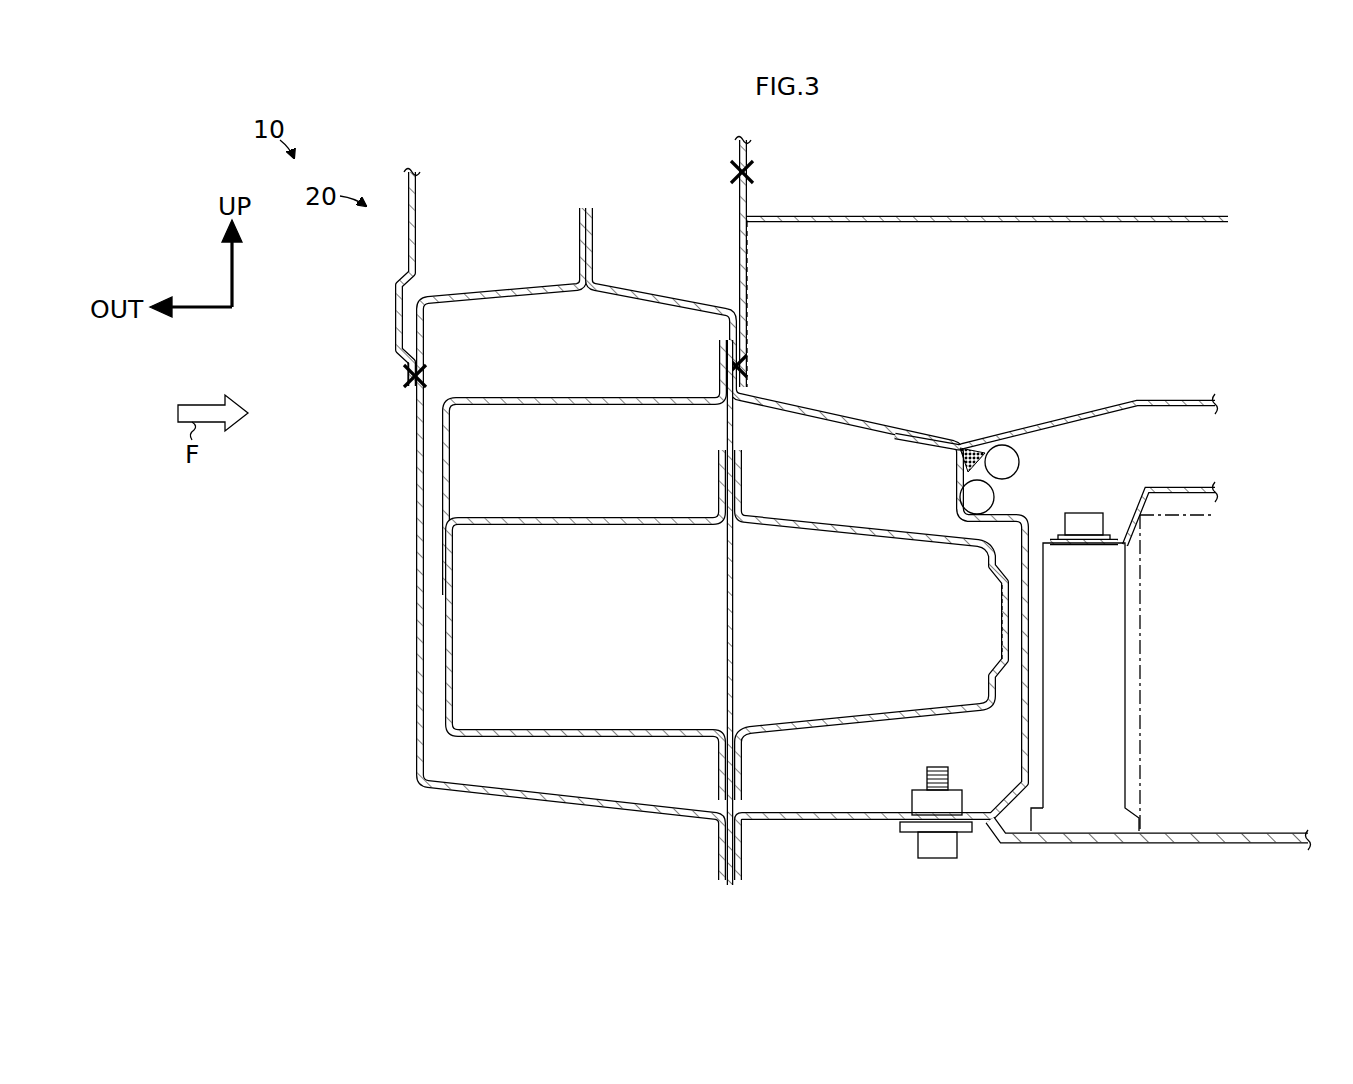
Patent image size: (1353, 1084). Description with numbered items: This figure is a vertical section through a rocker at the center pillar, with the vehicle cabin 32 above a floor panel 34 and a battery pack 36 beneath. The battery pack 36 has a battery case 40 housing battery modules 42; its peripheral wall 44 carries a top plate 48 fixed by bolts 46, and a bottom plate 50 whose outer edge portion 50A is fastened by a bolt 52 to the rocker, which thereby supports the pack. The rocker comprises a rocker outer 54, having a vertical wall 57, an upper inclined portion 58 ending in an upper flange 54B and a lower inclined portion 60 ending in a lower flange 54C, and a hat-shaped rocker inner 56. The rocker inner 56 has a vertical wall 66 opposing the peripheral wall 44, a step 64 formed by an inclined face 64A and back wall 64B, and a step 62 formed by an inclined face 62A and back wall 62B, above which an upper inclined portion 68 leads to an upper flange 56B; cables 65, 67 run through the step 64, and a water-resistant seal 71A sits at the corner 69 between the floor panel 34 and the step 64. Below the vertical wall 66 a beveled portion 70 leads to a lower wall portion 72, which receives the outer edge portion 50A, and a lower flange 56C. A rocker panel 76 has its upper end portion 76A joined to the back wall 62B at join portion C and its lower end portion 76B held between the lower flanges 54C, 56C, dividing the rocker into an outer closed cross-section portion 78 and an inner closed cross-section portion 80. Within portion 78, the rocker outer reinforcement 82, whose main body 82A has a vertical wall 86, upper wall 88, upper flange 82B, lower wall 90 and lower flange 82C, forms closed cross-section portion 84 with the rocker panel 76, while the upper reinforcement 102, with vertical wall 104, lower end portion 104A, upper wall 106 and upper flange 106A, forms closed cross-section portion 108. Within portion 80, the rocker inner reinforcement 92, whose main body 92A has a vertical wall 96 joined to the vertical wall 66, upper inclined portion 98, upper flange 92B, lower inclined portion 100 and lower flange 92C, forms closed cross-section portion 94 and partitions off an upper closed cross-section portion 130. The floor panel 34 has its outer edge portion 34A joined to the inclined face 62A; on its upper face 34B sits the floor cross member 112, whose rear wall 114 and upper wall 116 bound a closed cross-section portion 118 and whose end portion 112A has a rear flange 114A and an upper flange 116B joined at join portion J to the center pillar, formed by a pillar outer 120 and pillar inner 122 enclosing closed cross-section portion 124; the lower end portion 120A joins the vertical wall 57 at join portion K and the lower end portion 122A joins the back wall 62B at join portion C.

The vehicle cabin 32 is at (1078, 190).
The floor panel 34 is at (1146, 398).
The vehicle width direction outer edge portion 34A is at (905, 432).
The upper face 34B is at (1188, 398).
The battery pack 36 is at (1178, 848).
The battery case 40 is at (1110, 840).
The battery module 42 is at (1195, 588).
The peripheral wall 44 is at (1078, 812).
The bolt 46 is at (1084, 518).
The top plate 48 is at (1160, 488).
The bottom plate 50 is at (1232, 845).
The outer edge portion 50A is at (898, 826).
The bolt 52 is at (940, 860).
The rocker outer 54 is at (383, 462).
The upper flange 54B is at (578, 226).
The lower flange 54C is at (718, 855).
The rocker inner 56 is at (864, 400).
The upper flange 56B is at (594, 226).
The lower flange 56C is at (742, 852).
The vertical wall 57 is at (420, 515).
The upper inclined portion 58 is at (474, 293).
The lower inclined portion 60 is at (552, 792).
The step 62 is at (826, 397).
The inclined face 62A is at (842, 414).
The back wall 62B is at (748, 386).
The step 64 is at (1024, 476).
The inclined face 64A is at (1000, 522).
The back wall 64B is at (955, 472).
The cable 65 is at (978, 497).
The vertical wall 66 is at (1030, 710).
The cable 67 is at (1000, 460).
The upper inclined portion 68 is at (656, 300).
The corner 69 is at (988, 478).
The beveled portion 70 is at (1012, 805).
The weld joint 71A is at (968, 450).
The lower wall portion 72 is at (832, 824).
The rocker panel 76 is at (735, 612).
The upper end portion 76A is at (722, 362).
The lower end portion 76B is at (736, 778).
The closed cross-section portion 78 is at (536, 768).
The closed cross-section portion 80 is at (952, 738).
The rocker outer reinforcement 82 is at (550, 514).
The main body 82A is at (490, 516).
The upper flange 82B is at (720, 470).
The lower flange 82C is at (720, 772).
The closed cross-section portion 84 is at (598, 642).
The vertical wall 86 is at (452, 630).
The upper wall 88 is at (628, 524).
The lower wall 90 is at (586, 728).
The rocker inner reinforcement 92 is at (850, 536).
The main body 92A is at (775, 518).
The upper flange 92B is at (742, 468).
The lower flange 92C is at (742, 756).
The closed cross-section portion 94 is at (861, 642).
The vertical wall 96 is at (1012, 608).
The upper inclined portion 98 is at (848, 542).
The lower inclined portion 100 is at (854, 712).
The upper reinforcement 102 is at (555, 396).
The vertical wall 104 is at (448, 436).
The lower end portion 104A is at (442, 556).
The upper wall 106 is at (590, 406).
The upper flange 106A is at (720, 344).
The closed cross-section portion 108 is at (628, 498).
The floor cross member 112 is at (1126, 214).
The vehicle width direction end portion 112A is at (752, 212).
The rear wall 114 is at (998, 232).
The rear flange 114A is at (752, 308).
The upper wall 116 is at (922, 216).
The upper flange 116B is at (752, 195).
The closed cross-section portion 118 is at (1045, 322).
The pillar outer 120 is at (408, 240).
The lower end portion 120A is at (410, 370).
The pillar inner 122 is at (736, 232).
The lower end portion 122A is at (750, 342).
The closed cross-section portion 124 is at (528, 222).
The closed cross-section portion 130 is at (886, 440).
The join portion J is at (752, 172).
The join portion C is at (720, 370).
The join portion K is at (405, 384).